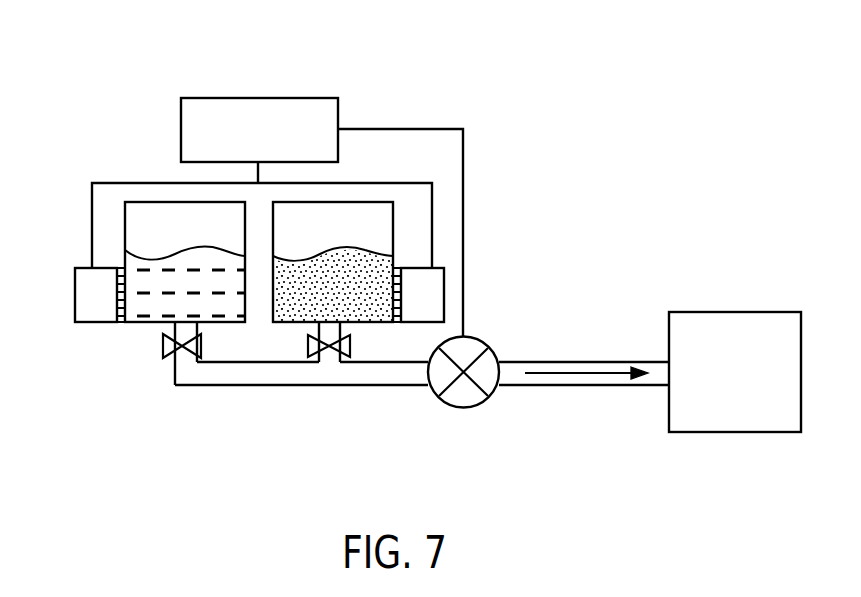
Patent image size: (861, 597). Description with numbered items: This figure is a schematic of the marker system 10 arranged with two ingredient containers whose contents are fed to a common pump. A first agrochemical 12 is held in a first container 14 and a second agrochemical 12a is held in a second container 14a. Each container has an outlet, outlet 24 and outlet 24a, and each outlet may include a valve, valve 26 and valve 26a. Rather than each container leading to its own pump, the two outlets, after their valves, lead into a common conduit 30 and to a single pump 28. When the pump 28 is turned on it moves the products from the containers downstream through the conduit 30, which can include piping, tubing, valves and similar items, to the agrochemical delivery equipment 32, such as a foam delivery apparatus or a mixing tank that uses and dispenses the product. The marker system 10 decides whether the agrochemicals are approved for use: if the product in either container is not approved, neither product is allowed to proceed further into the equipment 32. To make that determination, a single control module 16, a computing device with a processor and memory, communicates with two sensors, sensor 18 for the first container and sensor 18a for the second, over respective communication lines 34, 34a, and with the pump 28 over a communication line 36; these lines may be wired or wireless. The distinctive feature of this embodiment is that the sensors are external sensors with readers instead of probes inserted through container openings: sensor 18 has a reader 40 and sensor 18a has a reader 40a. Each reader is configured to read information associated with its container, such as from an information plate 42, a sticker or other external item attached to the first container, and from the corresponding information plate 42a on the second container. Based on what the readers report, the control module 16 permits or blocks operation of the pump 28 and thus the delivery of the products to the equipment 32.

The marker system 10 is at (383, 96).
The agrochemical 12 is at (158, 293).
The agrochemical 12a is at (355, 295).
The container 14 is at (150, 202).
The container 14a is at (370, 202).
The control module 16 is at (275, 98).
The sensor 18 is at (82, 325).
The sensor 18a is at (445, 300).
The outlet 24 is at (198, 330).
The outlet 24a is at (308, 332).
The valve 26 is at (183, 360).
The valve 26a is at (332, 360).
The pump 28 is at (463, 408).
The conduit 30 is at (255, 385).
The agrochemical delivery equipment 32 is at (722, 432).
The communication line 34 is at (91, 197).
The communication line 34a is at (432, 190).
The communication line 36 is at (463, 232).
The reader 40 is at (120, 268).
The reader 40a is at (401, 290).
The information plate 42 is at (120, 325).
The second sensor 42a is at (397, 262).